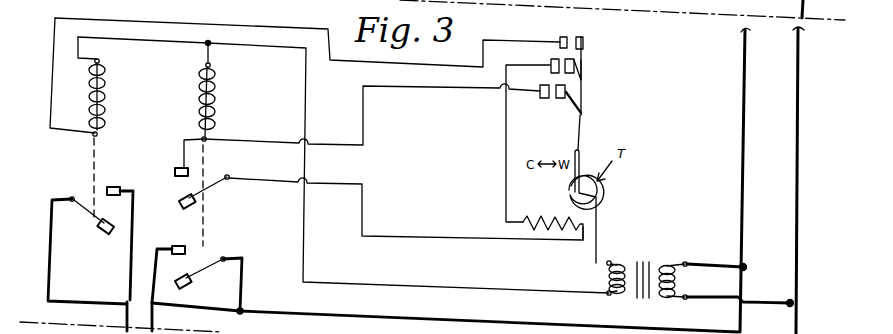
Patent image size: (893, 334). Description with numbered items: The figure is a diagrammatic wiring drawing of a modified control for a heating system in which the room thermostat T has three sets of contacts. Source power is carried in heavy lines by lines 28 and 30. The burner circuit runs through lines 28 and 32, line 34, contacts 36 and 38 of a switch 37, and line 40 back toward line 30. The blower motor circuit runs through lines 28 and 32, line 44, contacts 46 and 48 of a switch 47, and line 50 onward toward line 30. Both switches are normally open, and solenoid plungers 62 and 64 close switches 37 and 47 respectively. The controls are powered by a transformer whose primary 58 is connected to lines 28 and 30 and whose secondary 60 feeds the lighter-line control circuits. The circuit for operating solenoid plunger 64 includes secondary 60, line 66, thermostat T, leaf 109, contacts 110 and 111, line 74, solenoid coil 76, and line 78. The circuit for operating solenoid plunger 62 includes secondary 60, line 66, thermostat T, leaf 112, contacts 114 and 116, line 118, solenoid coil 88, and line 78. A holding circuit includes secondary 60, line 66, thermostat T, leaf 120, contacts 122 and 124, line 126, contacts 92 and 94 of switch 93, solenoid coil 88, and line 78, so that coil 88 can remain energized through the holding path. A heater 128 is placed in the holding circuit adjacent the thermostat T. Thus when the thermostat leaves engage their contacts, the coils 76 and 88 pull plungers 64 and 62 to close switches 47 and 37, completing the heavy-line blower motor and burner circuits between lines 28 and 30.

The line 28 is at (744, 143).
The line 30 is at (796, 172).
The line 32 is at (456, 318).
The line 34 is at (244, 290).
The contact 36 is at (192, 286).
The switch 37 is at (198, 259).
The contact 38 is at (182, 245).
The line 40 is at (160, 322).
The line 44 is at (51, 278).
The contact 46 is at (92, 227).
The switch 47 is at (106, 211).
The contact 48 is at (110, 186).
The line 50 is at (127, 285).
The primary 58 is at (672, 281).
The secondary 60 is at (618, 262).
The solenoid plunger 62 is at (206, 162).
The solenoid plunger 64 is at (92, 155).
The line 66 is at (598, 222).
The line 74 is at (430, 65).
The solenoid coil 76 is at (107, 96).
The line 78 is at (309, 98).
The solenoid coil 88 is at (217, 106).
The contact 92 is at (194, 206).
The switch 93 is at (188, 185).
The contact 94 is at (175, 170).
The leaf 109 is at (582, 66).
The contact 110 is at (583, 38).
The contact 111 is at (562, 36).
The leaf 112 is at (583, 100).
The contact 114 is at (559, 99).
The contact 116 is at (544, 99).
The line 118 is at (422, 88).
The leaf 120 is at (582, 80).
The contact 122 is at (583, 52).
The contact 124 is at (554, 58).
The line 126 is at (505, 151).
The heater 128 is at (555, 233).